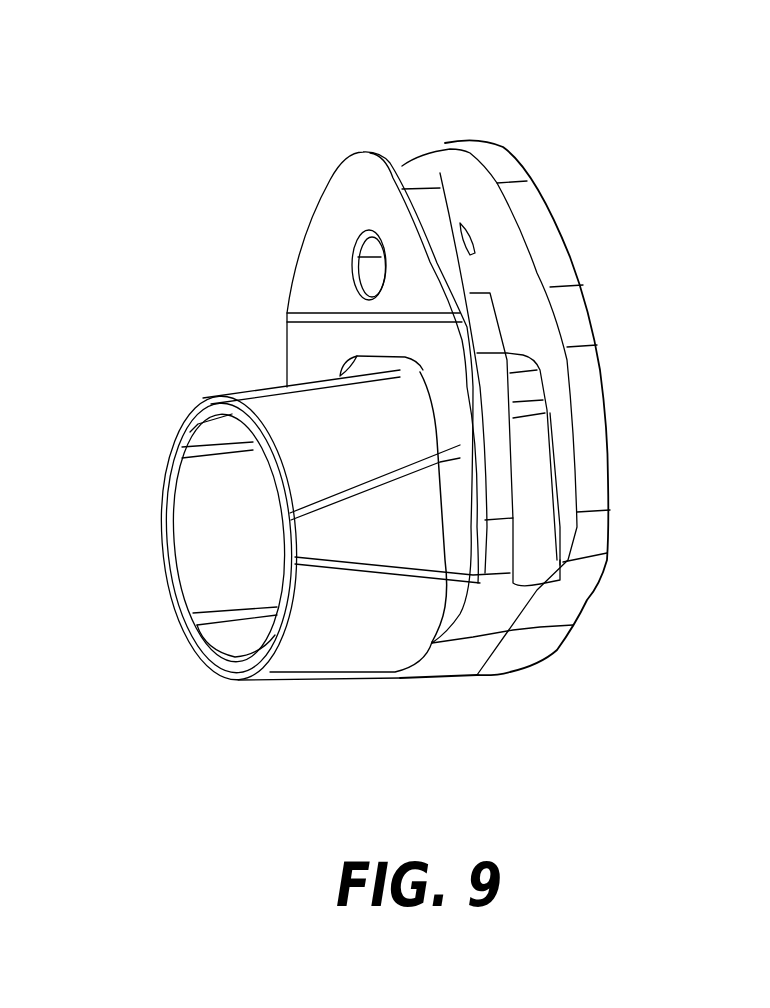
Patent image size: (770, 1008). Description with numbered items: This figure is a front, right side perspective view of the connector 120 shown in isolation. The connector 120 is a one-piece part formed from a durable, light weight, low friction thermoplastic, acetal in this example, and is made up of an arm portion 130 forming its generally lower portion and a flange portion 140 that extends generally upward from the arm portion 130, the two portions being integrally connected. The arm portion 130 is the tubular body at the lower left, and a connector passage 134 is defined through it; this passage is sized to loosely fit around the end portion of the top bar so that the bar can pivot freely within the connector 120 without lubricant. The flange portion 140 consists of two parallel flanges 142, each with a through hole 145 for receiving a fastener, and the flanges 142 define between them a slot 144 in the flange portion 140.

The connector 120 is at (405, 386).
The arm portion 130 is at (277, 557).
The connector passage 134 is at (212, 536).
The flange portion 140 is at (422, 345).
The flange 142 is at (329, 155).
The slot 144 is at (434, 150).
The through hole 145 is at (352, 266).